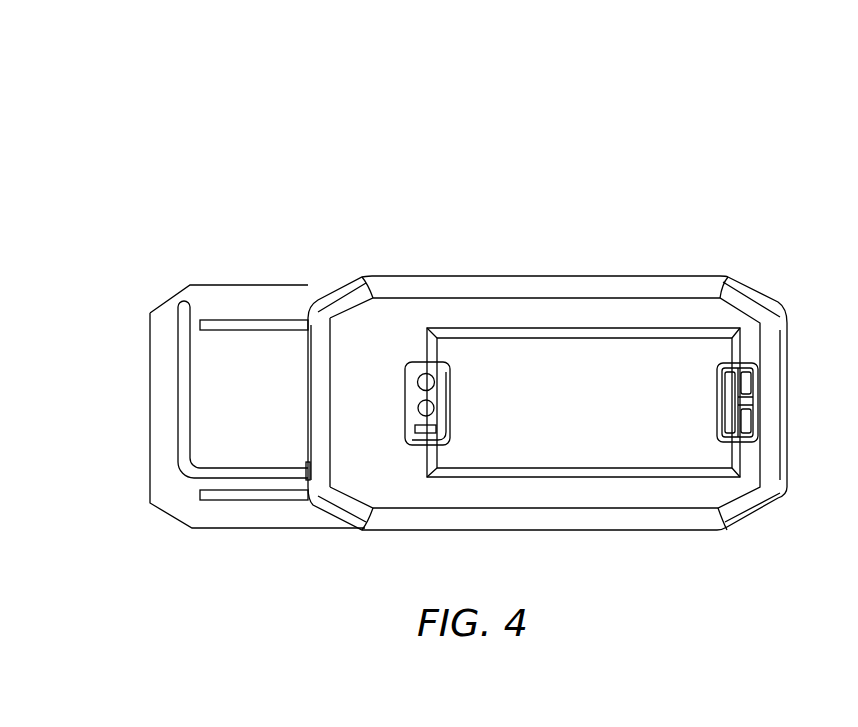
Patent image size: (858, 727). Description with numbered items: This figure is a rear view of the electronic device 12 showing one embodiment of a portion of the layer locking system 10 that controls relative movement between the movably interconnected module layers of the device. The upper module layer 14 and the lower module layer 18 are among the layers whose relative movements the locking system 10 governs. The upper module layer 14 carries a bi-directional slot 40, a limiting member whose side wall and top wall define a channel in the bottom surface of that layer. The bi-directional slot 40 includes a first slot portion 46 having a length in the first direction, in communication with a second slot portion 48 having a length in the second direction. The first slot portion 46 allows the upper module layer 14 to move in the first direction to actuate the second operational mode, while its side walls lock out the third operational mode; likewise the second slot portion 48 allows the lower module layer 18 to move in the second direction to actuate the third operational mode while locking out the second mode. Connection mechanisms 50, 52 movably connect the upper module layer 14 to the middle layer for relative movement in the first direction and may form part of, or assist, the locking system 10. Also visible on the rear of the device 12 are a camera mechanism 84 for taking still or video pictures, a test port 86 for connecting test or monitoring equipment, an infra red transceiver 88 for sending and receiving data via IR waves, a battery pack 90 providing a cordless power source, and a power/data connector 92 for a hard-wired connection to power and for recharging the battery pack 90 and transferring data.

The layer locking system 10 is at (167, 417).
The electronic device 12 is at (298, 130).
The upper module layer 14 is at (245, 367).
The lower module layer 18 is at (650, 363).
The bi-directional slot 40 is at (167, 453).
The first slot portion 46 is at (220, 475).
The second slot portion 48 is at (183, 358).
The connection mechanism 50 is at (267, 322).
The connection mechanism 52 is at (262, 497).
The camera mechanism 84 is at (422, 415).
The test port 86 is at (420, 372).
The infra red transceiver 88 is at (308, 483).
The battery pack 90 is at (667, 455).
The power/data connector 92 is at (730, 422).